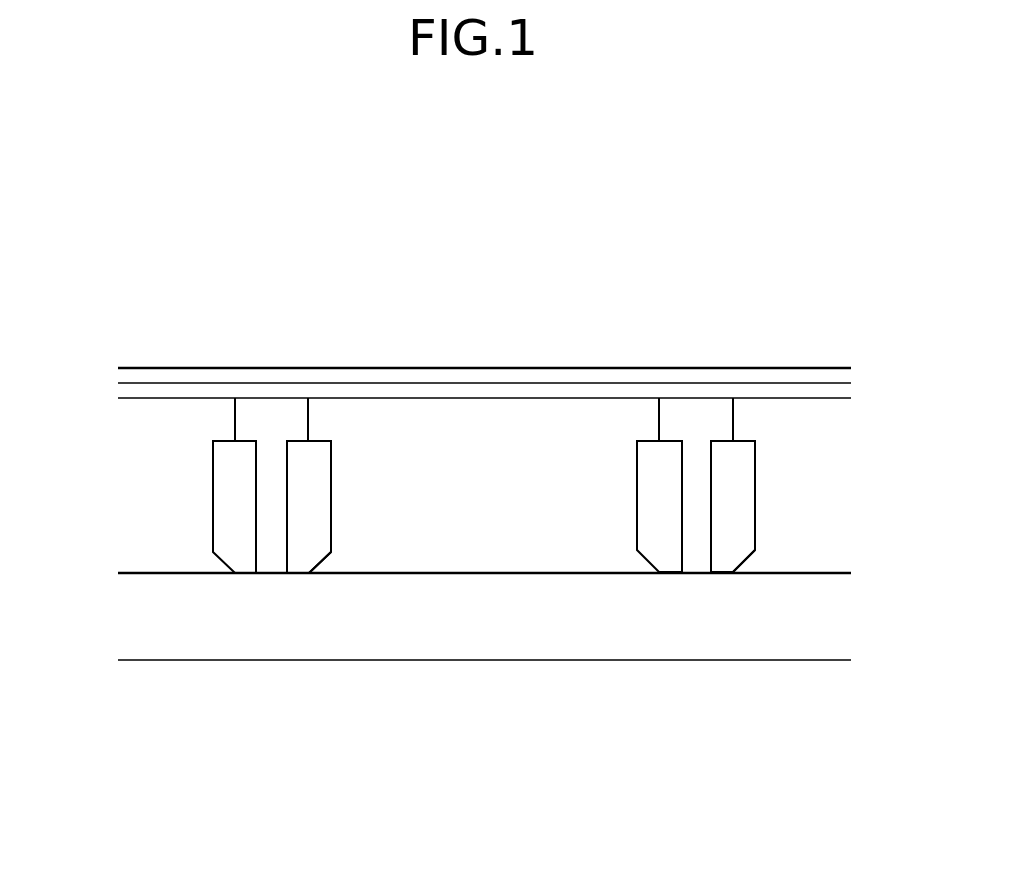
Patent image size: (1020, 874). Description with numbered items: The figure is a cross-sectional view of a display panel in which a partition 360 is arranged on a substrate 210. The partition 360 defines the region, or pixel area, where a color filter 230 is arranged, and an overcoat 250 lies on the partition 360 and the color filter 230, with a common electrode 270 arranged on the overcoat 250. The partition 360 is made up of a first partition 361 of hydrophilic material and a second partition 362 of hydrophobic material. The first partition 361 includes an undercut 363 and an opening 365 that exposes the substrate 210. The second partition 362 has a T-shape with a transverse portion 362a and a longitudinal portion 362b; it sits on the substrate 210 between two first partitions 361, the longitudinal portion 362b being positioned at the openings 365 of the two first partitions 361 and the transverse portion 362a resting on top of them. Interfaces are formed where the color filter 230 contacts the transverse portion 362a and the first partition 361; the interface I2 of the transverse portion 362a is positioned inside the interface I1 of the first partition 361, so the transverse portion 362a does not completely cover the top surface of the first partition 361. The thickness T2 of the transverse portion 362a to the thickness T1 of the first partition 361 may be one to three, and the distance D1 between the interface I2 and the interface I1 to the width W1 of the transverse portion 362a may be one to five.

The substrate 210 is at (520, 637).
The color filter 230 is at (172, 503).
The overcoat 250 is at (540, 391).
The common electrode 270 is at (632, 376).
The partition 360 is at (268, 621).
The first partition 361 is at (305, 555).
The second partition 362 is at (235, 597).
The transverse portion 362a is at (274, 555).
The longitudinal portion 362b is at (246, 416).
The undercut 363 is at (316, 567).
The opening 365 is at (287, 482).
The interface of the first partition I1 is at (332, 484).
The interface of the transverse portion I2 is at (310, 420).
The width of the transverse portion W1 is at (308, 397).
The distance between the interfaces D1 is at (331, 441).
The thickness of the first partition T1 is at (92, 441).
The thickness of the transverse portion T2 is at (118, 397).